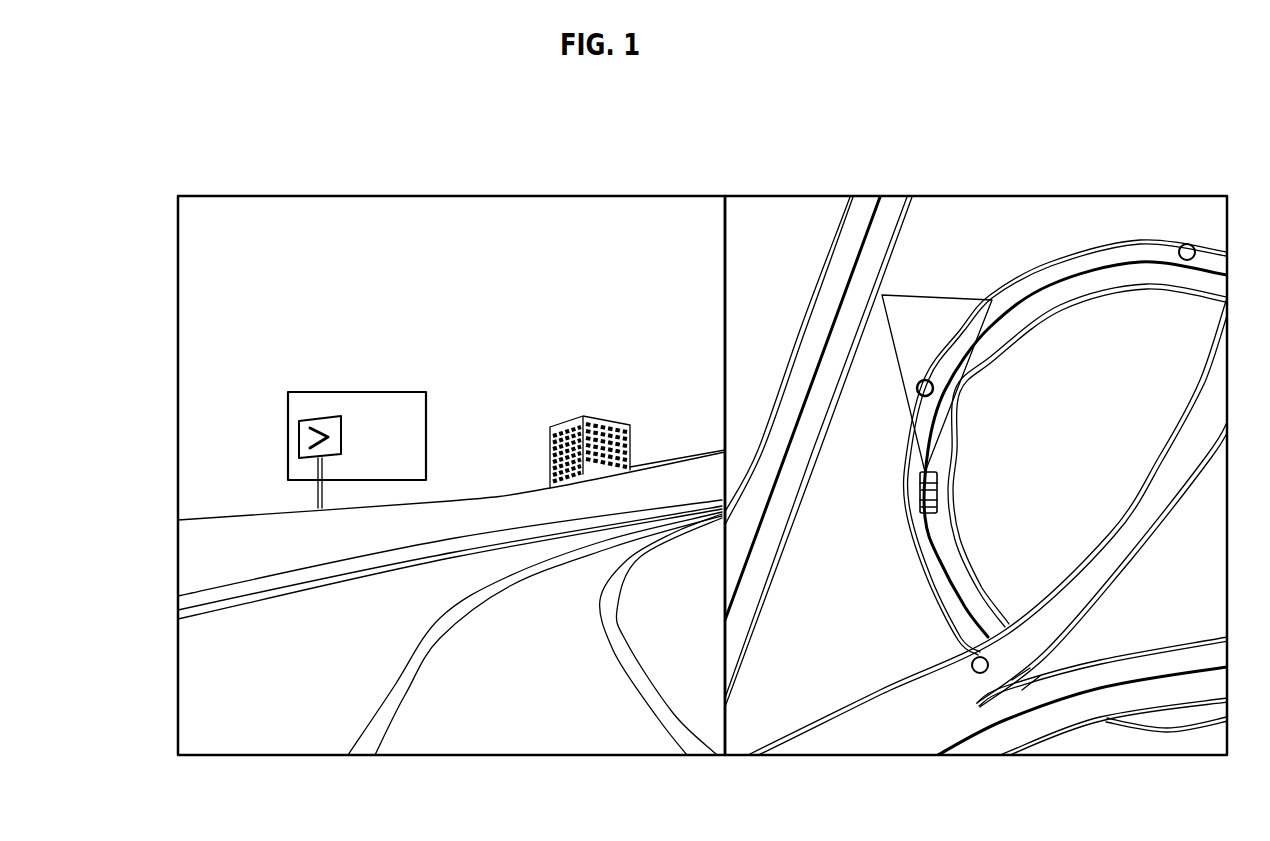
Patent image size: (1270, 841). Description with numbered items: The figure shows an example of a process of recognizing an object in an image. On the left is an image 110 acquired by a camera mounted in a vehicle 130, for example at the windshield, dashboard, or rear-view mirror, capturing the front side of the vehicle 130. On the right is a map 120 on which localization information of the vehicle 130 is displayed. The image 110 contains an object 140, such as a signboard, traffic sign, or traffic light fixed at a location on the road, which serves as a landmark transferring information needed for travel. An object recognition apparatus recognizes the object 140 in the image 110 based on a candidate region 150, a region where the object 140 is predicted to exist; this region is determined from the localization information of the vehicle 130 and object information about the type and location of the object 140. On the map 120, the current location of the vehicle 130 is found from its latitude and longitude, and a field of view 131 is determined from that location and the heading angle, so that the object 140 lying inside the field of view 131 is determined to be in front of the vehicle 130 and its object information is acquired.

The image 110 is at (452, 196).
The map 120 is at (1078, 196).
The vehicle 130 is at (921, 512).
The field of view 131 is at (938, 295).
The object 140 is at (917, 393).
The candidate region 150 is at (288, 436).